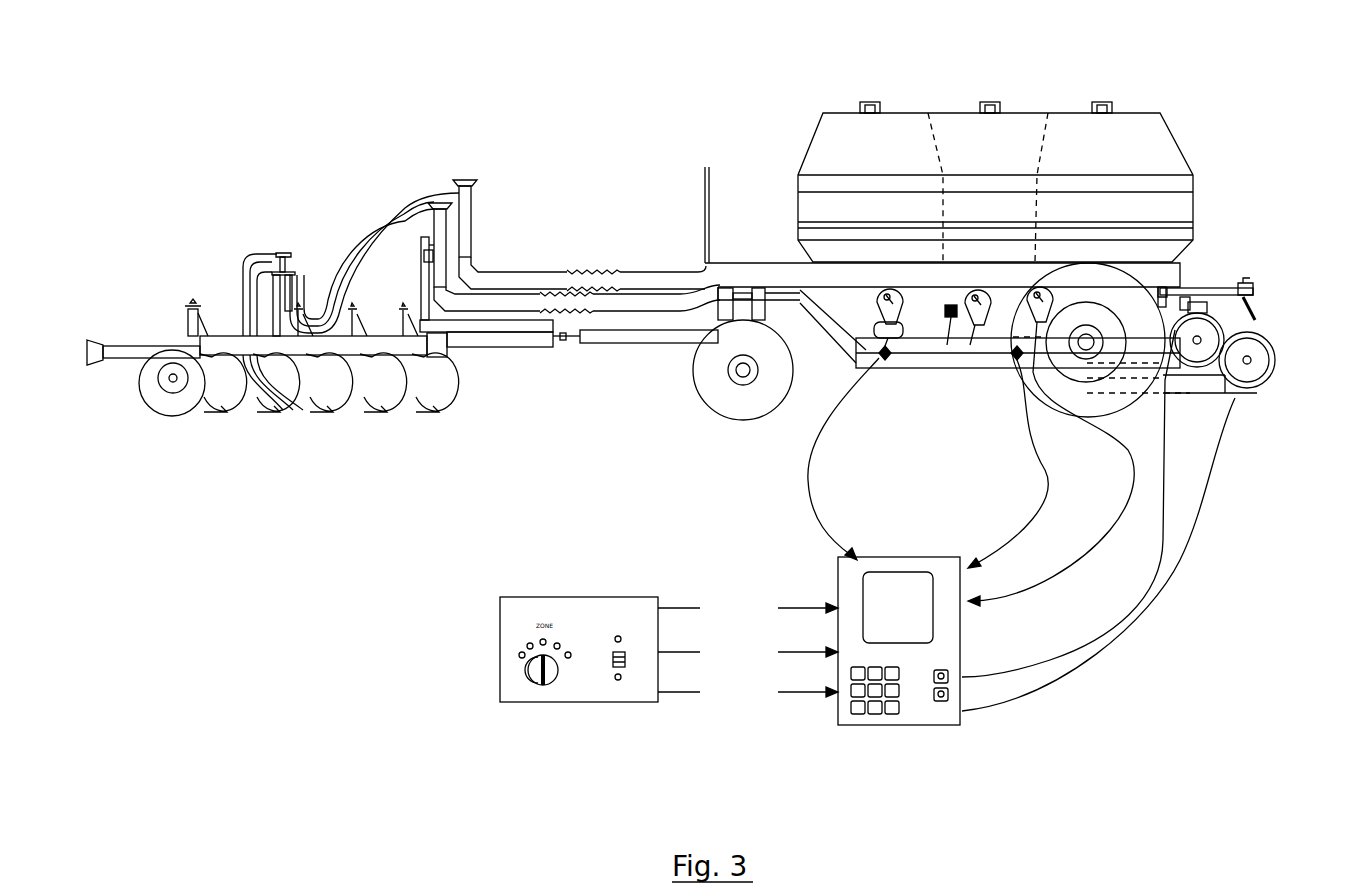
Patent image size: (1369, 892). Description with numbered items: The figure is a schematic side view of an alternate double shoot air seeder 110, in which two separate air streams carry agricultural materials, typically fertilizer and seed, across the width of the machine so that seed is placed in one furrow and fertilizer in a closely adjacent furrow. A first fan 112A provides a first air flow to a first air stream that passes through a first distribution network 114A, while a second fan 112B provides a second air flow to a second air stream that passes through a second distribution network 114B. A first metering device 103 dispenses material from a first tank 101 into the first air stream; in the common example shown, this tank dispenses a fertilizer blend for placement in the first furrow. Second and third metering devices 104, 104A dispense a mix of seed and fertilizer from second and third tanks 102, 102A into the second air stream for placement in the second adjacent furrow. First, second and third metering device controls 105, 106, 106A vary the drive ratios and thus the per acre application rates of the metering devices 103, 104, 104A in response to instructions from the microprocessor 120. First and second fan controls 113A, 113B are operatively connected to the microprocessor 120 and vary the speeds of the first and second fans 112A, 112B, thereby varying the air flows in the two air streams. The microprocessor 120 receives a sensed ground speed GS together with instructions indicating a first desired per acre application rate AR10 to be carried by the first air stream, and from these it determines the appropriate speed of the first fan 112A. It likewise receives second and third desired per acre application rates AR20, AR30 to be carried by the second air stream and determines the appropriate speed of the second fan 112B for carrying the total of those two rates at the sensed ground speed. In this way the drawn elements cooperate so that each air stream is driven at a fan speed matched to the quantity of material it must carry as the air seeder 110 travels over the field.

The double shoot air seeder 110 is at (507, 135).
The first tank 101 is at (820, 153).
The second tank 102 is at (1138, 128).
The third tank 102A is at (1018, 128).
The first metering device 103 is at (880, 362).
The second metering device 104 is at (1033, 380).
The third metering device 104A is at (947, 348).
The first metering device control 105 is at (885, 372).
The second metering device control 106 is at (1017, 362).
The third metering device control 106A is at (968, 352).
The first fan 112A is at (1233, 288).
The second fan 112B is at (1265, 384).
The first fan control 113A is at (1186, 298).
The second fan control 113B is at (1250, 285).
The first distribution network 114A is at (492, 300).
The second distribution network 114B is at (668, 270).
The microprocessor 120 is at (915, 727).
The ground speed GS is at (1052, 572).
The first desired per acre application rate AR10 is at (748, 610).
The second desired per acre application rate AR20 is at (748, 654).
The third desired per acre application rate AR30 is at (748, 694).